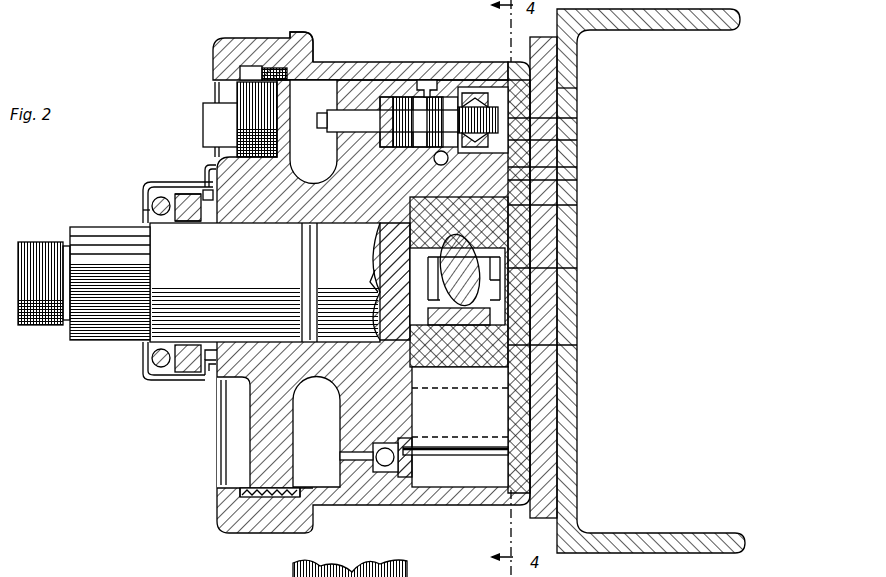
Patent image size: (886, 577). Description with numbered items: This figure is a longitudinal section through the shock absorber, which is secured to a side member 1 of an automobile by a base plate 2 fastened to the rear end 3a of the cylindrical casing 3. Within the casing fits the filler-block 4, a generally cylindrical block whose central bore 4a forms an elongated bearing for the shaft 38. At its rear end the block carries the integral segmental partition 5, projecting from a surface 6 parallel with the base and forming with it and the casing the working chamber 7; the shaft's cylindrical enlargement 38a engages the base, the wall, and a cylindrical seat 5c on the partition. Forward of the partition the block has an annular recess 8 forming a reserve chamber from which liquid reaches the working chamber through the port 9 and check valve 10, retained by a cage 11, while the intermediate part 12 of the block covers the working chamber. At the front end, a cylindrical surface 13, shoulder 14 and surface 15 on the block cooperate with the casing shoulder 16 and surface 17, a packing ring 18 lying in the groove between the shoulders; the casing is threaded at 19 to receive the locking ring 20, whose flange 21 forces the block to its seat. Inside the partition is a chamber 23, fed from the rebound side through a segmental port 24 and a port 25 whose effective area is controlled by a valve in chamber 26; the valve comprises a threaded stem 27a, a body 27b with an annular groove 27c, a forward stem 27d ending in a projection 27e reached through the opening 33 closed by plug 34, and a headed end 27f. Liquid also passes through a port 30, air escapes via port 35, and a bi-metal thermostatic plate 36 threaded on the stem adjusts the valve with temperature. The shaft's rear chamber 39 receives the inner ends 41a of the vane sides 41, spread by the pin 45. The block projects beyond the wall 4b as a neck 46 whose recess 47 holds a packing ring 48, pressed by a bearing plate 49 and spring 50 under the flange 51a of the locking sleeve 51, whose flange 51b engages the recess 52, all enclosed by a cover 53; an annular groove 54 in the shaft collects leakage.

The side member 1 is at (560, 268).
The base plate 2 is at (547, 395).
The cylindrical casing 3 is at (440, 505).
The rear or inner end of casing 3a is at (560, 345).
The filler-block 4 is at (361, 206).
The cylindrical bore 4a is at (243, 340).
The wall of block 4b is at (250, 448).
The segmental partition 5 is at (560, 166).
The cylindrical seat 5c is at (560, 180).
The surface of block 6 is at (412, 395).
The working chamber 7 is at (533, 460).
The annular recess 8 is at (313, 131).
The port 9 is at (345, 456).
The check valve 10 is at (388, 466).
The cage 11 is at (415, 465).
The intermediate part of block 12 is at (400, 418).
The cylindrical surface 13 is at (292, 440).
The annular shoulder 14 is at (217, 494).
The cylindrical surface 15 is at (238, 534).
The annular shoulder 16 is at (276, 534).
The cylindrical surface 17 is at (252, 535).
The packing ring 18 is at (268, 68).
The threads 19 is at (292, 68).
The locking ring 20 is at (231, 44).
The inwardly extending flange 21 is at (222, 62).
The chamber 23 is at (560, 88).
The segmental port 24 is at (428, 113).
The port 25 is at (448, 118).
The chamber 26 is at (386, 100).
The threaded stem 27a is at (557, 118).
The cylindrical body portion 27b is at (403, 118).
The annular groove 27c is at (430, 85).
The forwardly projecting stem 27d is at (348, 117).
The projection 27e is at (322, 115).
The headed end 27f is at (577, 140).
The port 30 is at (434, 158).
The opening 33 is at (210, 128).
The removable plug 34 is at (236, 97).
The port 35 is at (380, 283).
The bi-metal thermostatic plate 36 is at (480, 95).
The shaft 38 is at (165, 270).
The cylindrical enlargement 38a is at (560, 205).
The chamber 39 is at (500, 258).
The sides of outer vane member 41 is at (460, 427).
The inner ends of side members 41a is at (500, 287).
The pin 45 is at (560, 306).
The neck 46 is at (200, 378).
The recess 47 is at (180, 183).
The packing ring 48 is at (210, 212).
The annular bearing plate 49 is at (172, 220).
The spring 50 is at (148, 213).
The locking sleeve 51 is at (186, 380).
The annular flange 51a is at (148, 356).
The flange 51b is at (195, 207).
The annular recess 52 is at (212, 198).
The cover 53 is at (190, 182).
The annular groove 54 is at (312, 272).